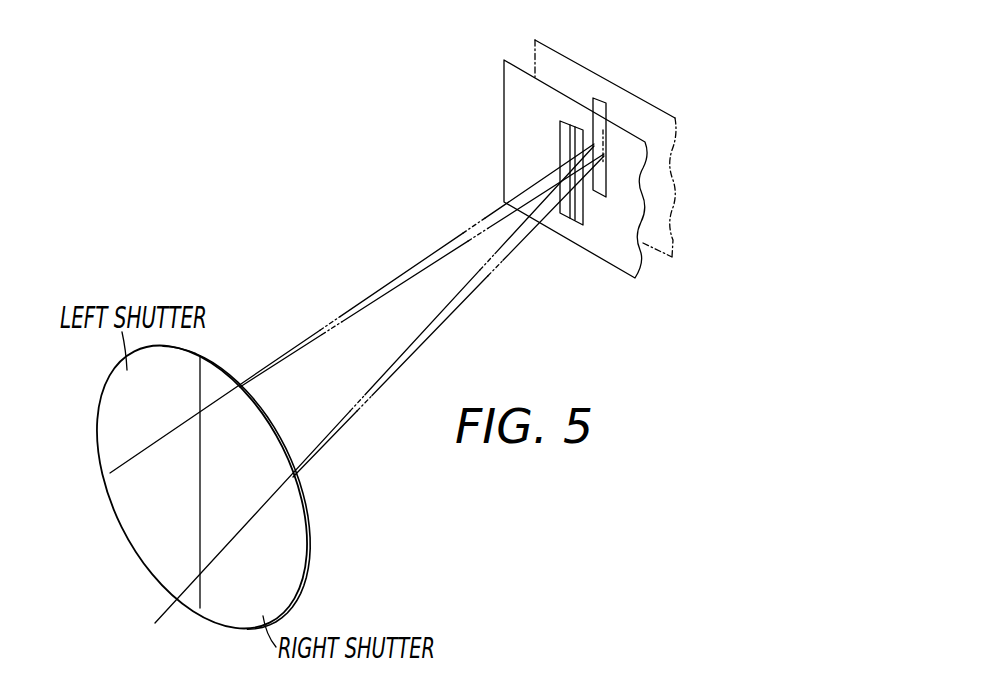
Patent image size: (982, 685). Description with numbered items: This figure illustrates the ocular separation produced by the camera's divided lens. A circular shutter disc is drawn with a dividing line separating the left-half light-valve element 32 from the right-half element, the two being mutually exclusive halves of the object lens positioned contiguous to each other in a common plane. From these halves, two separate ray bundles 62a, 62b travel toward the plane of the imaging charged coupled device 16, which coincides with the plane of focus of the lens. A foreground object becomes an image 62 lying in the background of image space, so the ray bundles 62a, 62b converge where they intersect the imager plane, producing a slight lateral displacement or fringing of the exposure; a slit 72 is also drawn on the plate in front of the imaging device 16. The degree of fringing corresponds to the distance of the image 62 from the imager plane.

The imaging charged coupled device 16 is at (652, 146).
The left-half light-valve element 32 is at (297, 547).
The image 62 is at (599, 97).
The ray bundle 62a is at (408, 347).
The ray bundle 62b is at (372, 294).
The slit 72 is at (570, 124).